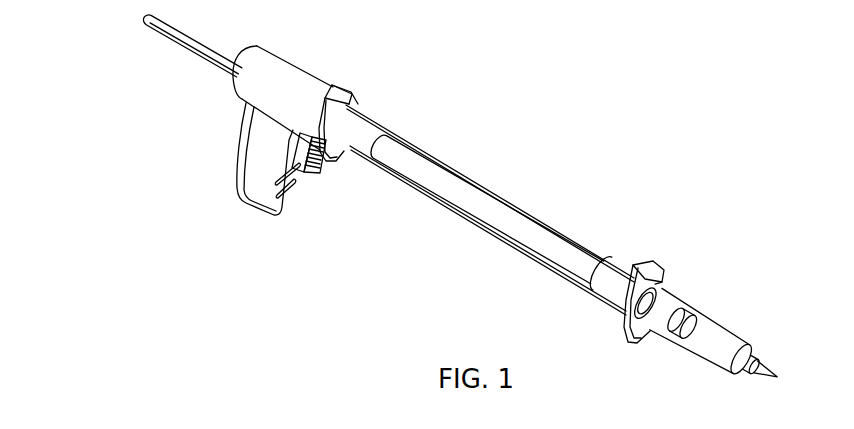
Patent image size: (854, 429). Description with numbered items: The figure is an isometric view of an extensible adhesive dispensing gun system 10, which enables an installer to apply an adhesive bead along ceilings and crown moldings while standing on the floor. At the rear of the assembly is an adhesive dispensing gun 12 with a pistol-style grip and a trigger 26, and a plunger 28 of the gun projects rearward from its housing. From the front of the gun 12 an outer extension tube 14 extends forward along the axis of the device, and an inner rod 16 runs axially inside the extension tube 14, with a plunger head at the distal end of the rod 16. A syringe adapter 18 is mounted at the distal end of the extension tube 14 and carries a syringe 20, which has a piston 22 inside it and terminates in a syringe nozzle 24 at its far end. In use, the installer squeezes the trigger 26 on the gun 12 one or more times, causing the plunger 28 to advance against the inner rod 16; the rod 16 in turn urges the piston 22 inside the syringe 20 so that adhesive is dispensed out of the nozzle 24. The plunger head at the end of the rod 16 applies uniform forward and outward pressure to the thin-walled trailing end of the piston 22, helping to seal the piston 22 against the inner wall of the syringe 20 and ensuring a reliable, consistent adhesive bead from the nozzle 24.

The extensible adhesive dispensing gun system 10 is at (471, 198).
The adhesive dispensing gun 12 is at (252, 206).
The outer extension tube 14 is at (485, 183).
The inner rod 16 is at (508, 231).
The syringe adapter 18 is at (655, 263).
The syringe 20 is at (722, 326).
The piston 22 is at (677, 330).
The syringe nozzle 24 is at (766, 370).
The trigger 26 is at (317, 171).
The plunger 28 is at (205, 35).